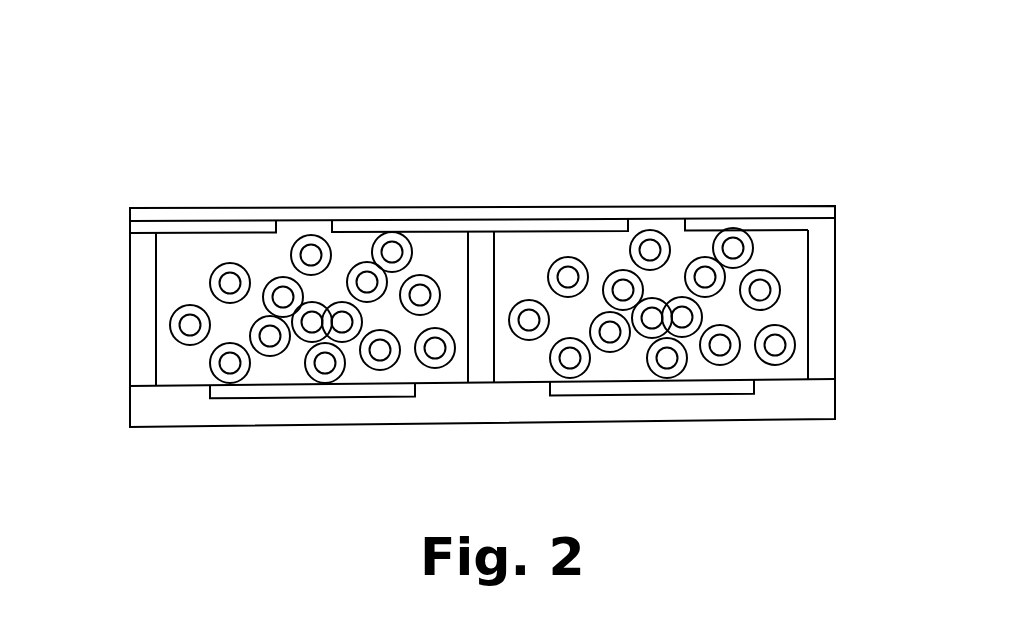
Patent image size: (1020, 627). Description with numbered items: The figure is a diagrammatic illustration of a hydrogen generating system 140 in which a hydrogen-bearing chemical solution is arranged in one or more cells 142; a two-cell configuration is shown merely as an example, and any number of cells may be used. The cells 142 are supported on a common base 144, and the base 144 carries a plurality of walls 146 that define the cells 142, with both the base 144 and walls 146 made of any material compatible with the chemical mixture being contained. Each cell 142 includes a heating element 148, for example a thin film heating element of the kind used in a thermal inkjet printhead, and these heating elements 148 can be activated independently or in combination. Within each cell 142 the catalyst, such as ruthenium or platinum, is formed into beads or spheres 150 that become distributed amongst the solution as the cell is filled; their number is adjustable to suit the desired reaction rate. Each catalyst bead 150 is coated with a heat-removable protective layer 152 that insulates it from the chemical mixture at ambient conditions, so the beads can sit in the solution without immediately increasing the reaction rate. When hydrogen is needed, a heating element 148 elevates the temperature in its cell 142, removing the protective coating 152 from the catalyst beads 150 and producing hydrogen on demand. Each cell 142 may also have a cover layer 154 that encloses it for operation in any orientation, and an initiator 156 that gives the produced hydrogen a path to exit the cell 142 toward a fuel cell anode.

The hydrogen generating system 140 is at (744, 96).
The chemical mixture cell 142 is at (205, 252).
The base 144 is at (495, 407).
The wall 146 is at (482, 250).
The heating element 148 is at (187, 393).
The catalyst bead 150 is at (187, 320).
The protective layer 152 is at (210, 277).
The cover layer 154 is at (237, 222).
The initiator 156 is at (305, 230).